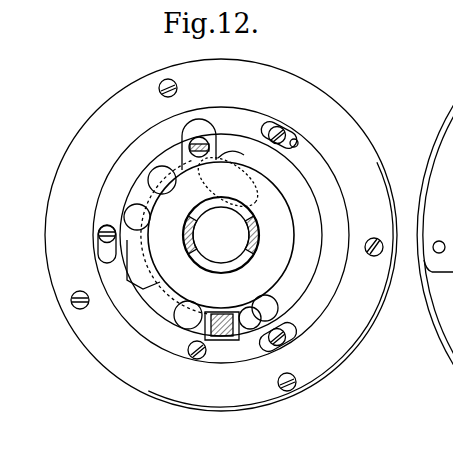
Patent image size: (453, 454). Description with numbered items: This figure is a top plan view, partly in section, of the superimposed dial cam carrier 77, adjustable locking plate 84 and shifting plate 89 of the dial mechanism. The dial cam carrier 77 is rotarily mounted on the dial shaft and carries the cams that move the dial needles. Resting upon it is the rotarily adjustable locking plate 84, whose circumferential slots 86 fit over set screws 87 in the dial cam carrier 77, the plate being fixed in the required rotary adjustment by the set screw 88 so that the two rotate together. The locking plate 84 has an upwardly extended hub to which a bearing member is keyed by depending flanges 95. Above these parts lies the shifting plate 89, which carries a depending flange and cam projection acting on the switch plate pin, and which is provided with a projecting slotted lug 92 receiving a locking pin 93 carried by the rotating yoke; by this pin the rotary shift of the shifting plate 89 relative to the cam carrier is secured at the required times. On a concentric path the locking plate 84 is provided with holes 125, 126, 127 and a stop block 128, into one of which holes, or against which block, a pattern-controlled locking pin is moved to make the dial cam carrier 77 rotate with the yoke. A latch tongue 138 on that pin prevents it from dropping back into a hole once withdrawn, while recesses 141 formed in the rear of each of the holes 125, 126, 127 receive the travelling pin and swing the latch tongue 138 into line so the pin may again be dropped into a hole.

The dial cam carrier 77 is at (347, 133).
The adjustable locking plate 84 is at (302, 193).
The circumferential slots 86 is at (296, 140).
The set screws 87 is at (277, 127).
The set screw 88 is at (187, 357).
The shifting plate 89 is at (275, 264).
The projecting slotted lug 92 is at (200, 127).
The locking pin 93 is at (210, 138).
The depending flanges 95 is at (258, 226).
The hole 125 is at (217, 340).
The hole 126 is at (251, 318).
The hole 127 is at (150, 187).
The stop block 128 is at (133, 267).
The latch tongue 138 is at (259, 314).
The recesses 141 is at (152, 178).